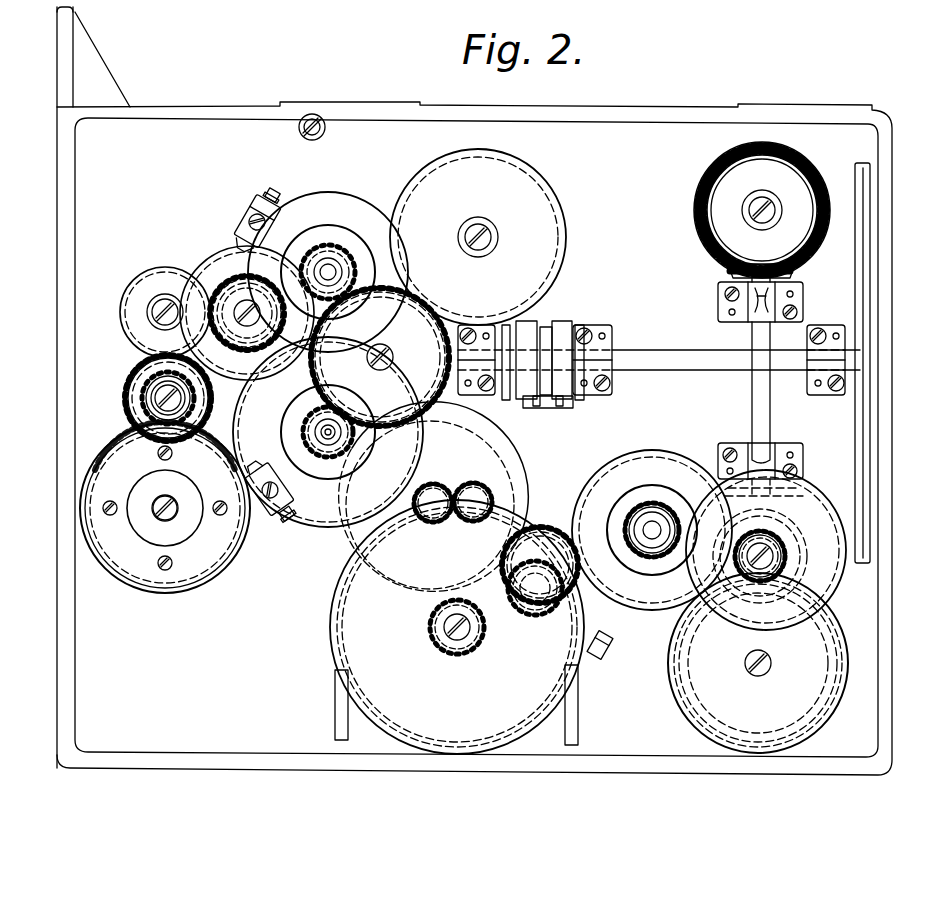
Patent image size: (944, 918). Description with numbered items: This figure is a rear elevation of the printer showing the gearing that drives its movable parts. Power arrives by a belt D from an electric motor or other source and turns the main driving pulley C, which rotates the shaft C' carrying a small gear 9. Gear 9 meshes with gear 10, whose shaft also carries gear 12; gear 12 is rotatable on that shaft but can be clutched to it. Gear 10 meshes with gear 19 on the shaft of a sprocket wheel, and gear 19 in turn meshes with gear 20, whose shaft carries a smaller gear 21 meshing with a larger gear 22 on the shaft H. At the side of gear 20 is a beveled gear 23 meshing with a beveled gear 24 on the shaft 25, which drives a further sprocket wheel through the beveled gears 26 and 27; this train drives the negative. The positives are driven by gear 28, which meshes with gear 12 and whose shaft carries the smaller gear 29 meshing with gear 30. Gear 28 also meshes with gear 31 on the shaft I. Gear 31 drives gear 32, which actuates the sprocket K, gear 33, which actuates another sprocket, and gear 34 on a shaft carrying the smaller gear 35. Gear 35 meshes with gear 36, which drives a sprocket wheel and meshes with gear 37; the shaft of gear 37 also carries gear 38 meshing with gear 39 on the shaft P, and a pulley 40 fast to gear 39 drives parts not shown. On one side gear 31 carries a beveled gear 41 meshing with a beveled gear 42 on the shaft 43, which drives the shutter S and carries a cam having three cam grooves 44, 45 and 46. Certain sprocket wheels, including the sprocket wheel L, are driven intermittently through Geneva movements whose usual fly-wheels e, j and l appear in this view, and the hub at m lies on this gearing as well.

The small gear 9 is at (437, 633).
The gear 10 is at (520, 638).
The gear 12 is at (545, 528).
The gear 19 is at (652, 503).
The gear 20 is at (808, 498).
The smaller gear 21 is at (772, 548).
The larger gear 22 is at (830, 648).
The beveled gear 23 is at (820, 562).
The beveled gear 24 is at (798, 492).
The shaft 25 is at (757, 410).
The beveled gear 26 is at (728, 272).
The beveled gear 27 is at (826, 246).
The gear 28 is at (490, 452).
The smaller gear 29 is at (434, 484).
The gear 30 is at (474, 485).
The gear 31 is at (440, 418).
The gear 32 is at (545, 200).
The gear 33 is at (332, 452).
The gear 34 is at (241, 372).
The smaller gear 35 is at (235, 290).
The gear 36 is at (153, 288).
The gear 37 is at (135, 380).
The gear 38 is at (148, 398).
The gear 39 is at (125, 455).
The pulley 40 is at (142, 565).
The beveled gear 41 is at (390, 362).
The beveled gear 42 is at (388, 340).
The shaft 43 is at (678, 360).
The cam groove 44 is at (490, 322).
The cam groove 45 is at (556, 322).
The cam groove 46 is at (566, 322).
The main driving pulley C is at (428, 627).
The shaft C' is at (457, 651).
The belt D is at (335, 705).
The fly-wheel e is at (658, 600).
The shaft H is at (770, 672).
The shaft I is at (352, 380).
The fly-wheel j is at (322, 500).
The sprocket K is at (498, 240).
The sprocket wheel L is at (523, 607).
The fly-wheel l is at (337, 202).
The shaft m is at (243, 320).
The shaft P is at (168, 515).
The shutter S is at (872, 248).